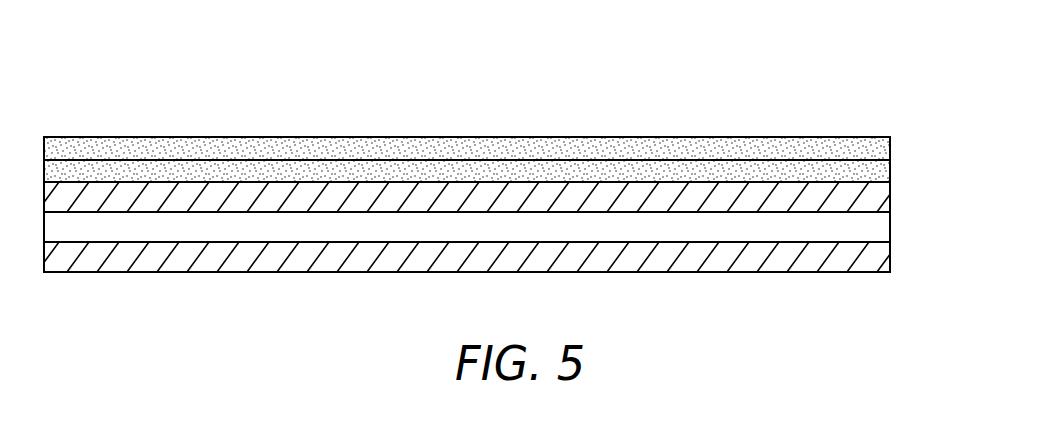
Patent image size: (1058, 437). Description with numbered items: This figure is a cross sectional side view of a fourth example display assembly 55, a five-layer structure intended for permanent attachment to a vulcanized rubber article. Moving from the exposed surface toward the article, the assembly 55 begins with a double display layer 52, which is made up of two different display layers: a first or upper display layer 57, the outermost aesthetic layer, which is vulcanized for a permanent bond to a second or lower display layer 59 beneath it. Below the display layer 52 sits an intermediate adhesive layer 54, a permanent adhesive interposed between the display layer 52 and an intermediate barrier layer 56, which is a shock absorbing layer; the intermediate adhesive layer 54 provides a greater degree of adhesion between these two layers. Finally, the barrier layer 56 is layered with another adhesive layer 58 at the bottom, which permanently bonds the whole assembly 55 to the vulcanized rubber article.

The display layer 52 is at (501, 117).
The intermediate adhesive layer 54 is at (720, 195).
The display assembly 55 is at (497, 178).
The intermediate barrier layer 56 is at (842, 225).
The first or upper display layer 57 is at (675, 150).
The adhesive layer 58 is at (747, 255).
The second or lower display layer 59 is at (703, 170).